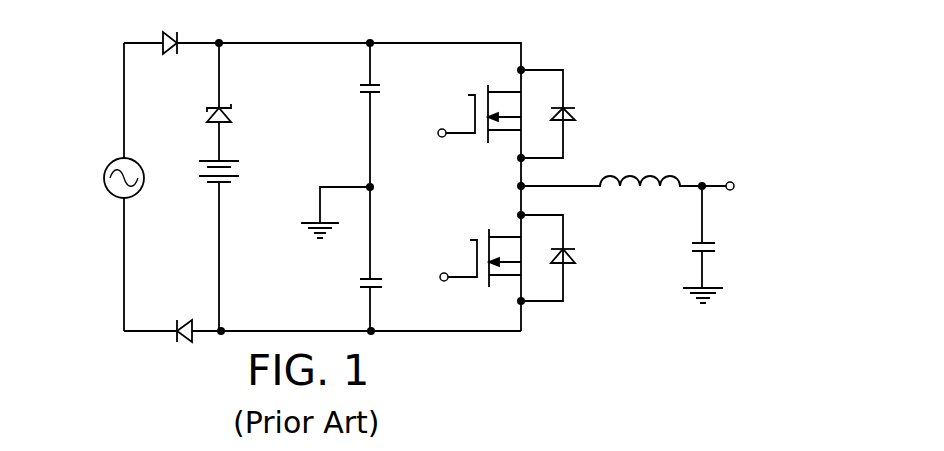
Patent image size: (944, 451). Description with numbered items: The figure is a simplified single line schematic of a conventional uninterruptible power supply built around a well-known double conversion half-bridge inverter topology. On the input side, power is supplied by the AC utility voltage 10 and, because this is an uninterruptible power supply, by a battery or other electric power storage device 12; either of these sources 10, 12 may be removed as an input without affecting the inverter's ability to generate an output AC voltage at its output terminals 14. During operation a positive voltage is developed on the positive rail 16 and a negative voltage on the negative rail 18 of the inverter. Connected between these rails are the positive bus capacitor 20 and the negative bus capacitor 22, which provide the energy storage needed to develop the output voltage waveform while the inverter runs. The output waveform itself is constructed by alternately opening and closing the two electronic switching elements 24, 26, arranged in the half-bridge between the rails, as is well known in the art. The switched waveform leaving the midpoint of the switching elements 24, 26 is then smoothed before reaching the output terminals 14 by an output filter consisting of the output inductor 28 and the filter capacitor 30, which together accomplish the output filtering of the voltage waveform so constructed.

The AC utility voltage 10 is at (104, 176).
The battery or other electric power storage device 12 is at (210, 158).
The output terminals 14 is at (731, 181).
The positive rail 16 is at (437, 42).
The negative rail 18 is at (442, 331).
The positive bus capacitor 20 is at (367, 94).
The negative bus capacitor 22 is at (367, 277).
The electronic switching element 24 is at (472, 154).
The electronic switching element 26 is at (472, 296).
The output inductor 28 is at (650, 174).
The filter capacitor 30 is at (697, 242).